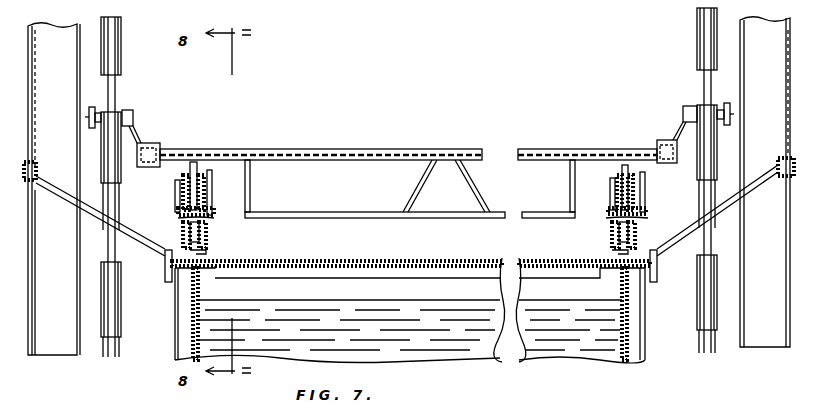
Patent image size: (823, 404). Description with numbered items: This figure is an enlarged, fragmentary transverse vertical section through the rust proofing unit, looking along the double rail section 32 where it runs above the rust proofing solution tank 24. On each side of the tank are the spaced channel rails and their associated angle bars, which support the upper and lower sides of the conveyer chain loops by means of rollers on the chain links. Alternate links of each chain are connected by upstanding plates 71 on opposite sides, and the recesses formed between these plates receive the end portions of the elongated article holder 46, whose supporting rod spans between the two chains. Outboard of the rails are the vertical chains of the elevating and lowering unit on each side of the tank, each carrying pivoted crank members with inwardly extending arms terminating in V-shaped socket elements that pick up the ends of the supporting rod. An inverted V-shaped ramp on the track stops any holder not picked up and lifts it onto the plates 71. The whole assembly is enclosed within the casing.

The rust proofing solution tank 24 is at (198, 312).
The double rail section 32 is at (607, 186).
The article holder 46 is at (369, 150).
The upstanding plate 71 is at (194, 165).